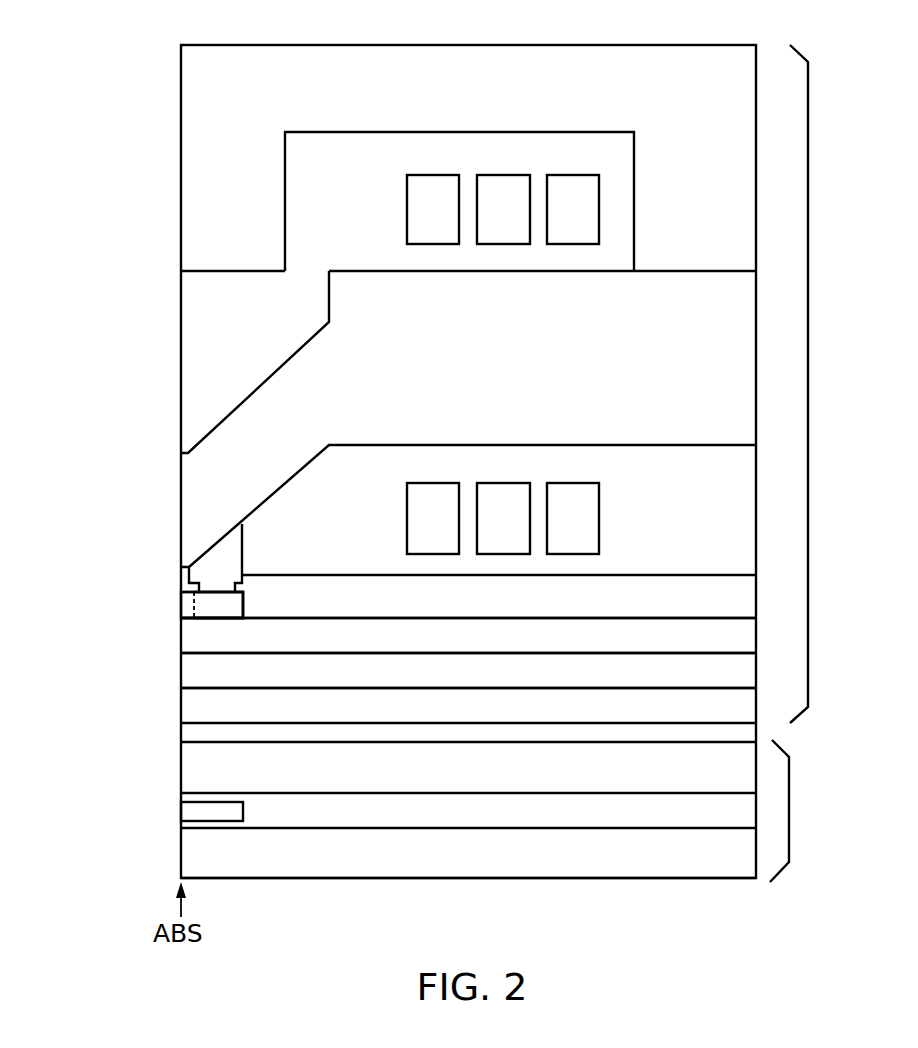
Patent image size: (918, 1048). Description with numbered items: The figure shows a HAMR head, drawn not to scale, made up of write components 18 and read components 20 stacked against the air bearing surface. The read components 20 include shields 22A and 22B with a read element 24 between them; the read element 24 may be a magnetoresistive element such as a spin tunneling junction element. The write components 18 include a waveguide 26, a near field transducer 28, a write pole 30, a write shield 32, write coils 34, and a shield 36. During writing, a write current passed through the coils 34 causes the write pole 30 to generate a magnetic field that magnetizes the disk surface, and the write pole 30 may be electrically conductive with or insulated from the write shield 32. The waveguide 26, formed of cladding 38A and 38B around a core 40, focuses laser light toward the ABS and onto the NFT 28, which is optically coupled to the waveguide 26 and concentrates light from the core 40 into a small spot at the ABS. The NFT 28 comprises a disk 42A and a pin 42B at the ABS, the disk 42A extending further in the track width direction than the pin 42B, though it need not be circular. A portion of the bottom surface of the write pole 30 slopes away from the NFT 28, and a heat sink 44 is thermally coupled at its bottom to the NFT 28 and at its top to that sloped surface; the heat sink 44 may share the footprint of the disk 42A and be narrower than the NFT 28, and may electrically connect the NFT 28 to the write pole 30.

The write components 18 is at (808, 385).
The read components 20 is at (789, 809).
The shield 22A is at (746, 782).
The shield 22B is at (746, 866).
The read element 24 is at (221, 813).
The waveguide 26 is at (98, 614).
The near field transducer 28 is at (172, 614).
The write pole 30 is at (746, 439).
The write shield 32 is at (746, 261).
The write coil 34 is at (622, 515).
The shield 36 is at (746, 719).
The cladding 38A is at (743, 612).
The cladding 38B is at (743, 684).
The core 40 is at (746, 651).
The disk 42A is at (230, 607).
The pin 42B is at (182, 607).
The heat sink 44 is at (186, 574).